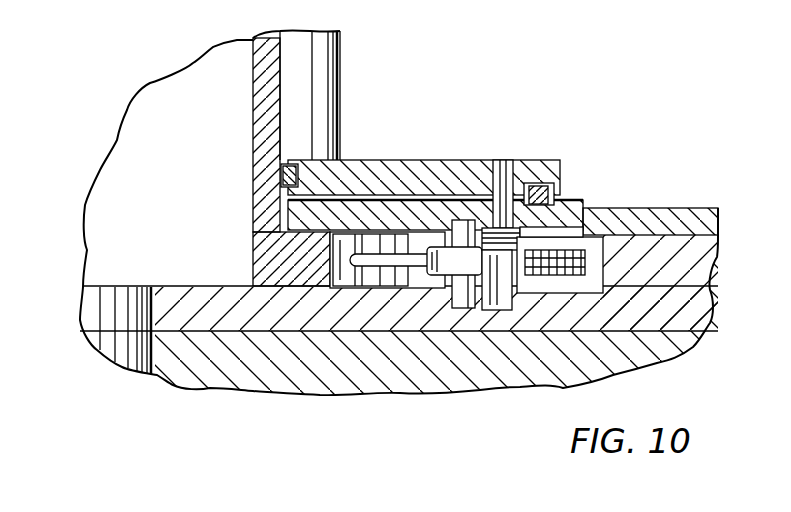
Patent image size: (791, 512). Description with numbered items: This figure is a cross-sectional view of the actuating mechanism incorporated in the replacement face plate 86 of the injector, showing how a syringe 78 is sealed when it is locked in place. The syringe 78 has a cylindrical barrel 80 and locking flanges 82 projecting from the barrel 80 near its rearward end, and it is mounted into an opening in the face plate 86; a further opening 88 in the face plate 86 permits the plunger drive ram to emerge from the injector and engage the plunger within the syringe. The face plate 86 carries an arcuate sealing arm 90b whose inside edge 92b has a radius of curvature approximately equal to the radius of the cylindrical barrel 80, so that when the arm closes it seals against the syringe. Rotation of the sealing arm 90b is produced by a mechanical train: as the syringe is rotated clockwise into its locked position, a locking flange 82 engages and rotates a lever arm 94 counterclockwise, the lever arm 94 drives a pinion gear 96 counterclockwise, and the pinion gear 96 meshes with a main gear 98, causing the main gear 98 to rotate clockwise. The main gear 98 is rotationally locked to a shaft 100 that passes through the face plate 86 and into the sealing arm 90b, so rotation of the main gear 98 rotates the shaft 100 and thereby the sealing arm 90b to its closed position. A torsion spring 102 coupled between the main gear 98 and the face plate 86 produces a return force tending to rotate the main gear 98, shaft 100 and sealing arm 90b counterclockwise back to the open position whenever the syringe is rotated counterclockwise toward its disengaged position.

The syringe 78 is at (348, 56).
The cylindrical barrel 80 is at (258, 96).
The locking flanges 82 is at (282, 258).
The replacement face plate 86 is at (724, 268).
The opening 88 is at (107, 337).
The sealing arm 90b is at (393, 160).
The edge 92b is at (253, 178).
The lever arm 94 is at (373, 288).
The pinion gear 96 is at (452, 222).
The main gear 98 is at (590, 252).
The shaft 100 is at (498, 228).
The torsion spring 102 is at (566, 212).